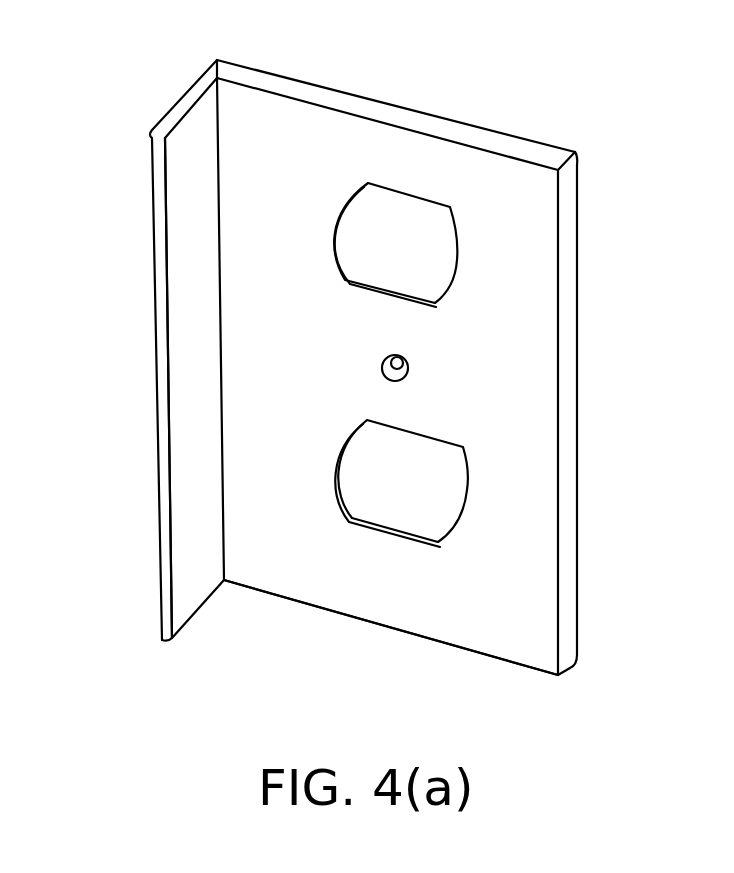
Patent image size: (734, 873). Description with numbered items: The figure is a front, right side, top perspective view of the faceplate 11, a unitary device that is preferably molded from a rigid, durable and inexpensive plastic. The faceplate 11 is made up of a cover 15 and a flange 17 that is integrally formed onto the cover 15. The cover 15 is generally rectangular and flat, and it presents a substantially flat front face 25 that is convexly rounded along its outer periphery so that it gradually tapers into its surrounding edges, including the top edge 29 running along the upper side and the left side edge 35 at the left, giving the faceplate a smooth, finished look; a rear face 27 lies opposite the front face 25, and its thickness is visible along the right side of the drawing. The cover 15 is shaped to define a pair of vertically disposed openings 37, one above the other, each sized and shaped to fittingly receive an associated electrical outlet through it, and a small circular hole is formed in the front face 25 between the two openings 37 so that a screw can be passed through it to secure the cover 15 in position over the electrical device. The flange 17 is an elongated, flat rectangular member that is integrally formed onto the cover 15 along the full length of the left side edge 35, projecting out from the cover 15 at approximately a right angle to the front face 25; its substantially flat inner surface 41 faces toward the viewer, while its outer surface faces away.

The faceplate 11 is at (199, 694).
The cover 15 is at (543, 215).
The flange 17 is at (157, 317).
The front face 25 is at (522, 583).
The rear face 27 is at (578, 287).
The top edge 29 is at (462, 118).
The left side edge 35 is at (227, 72).
The openings 37 is at (378, 212).
The inner surface 41 is at (195, 508).